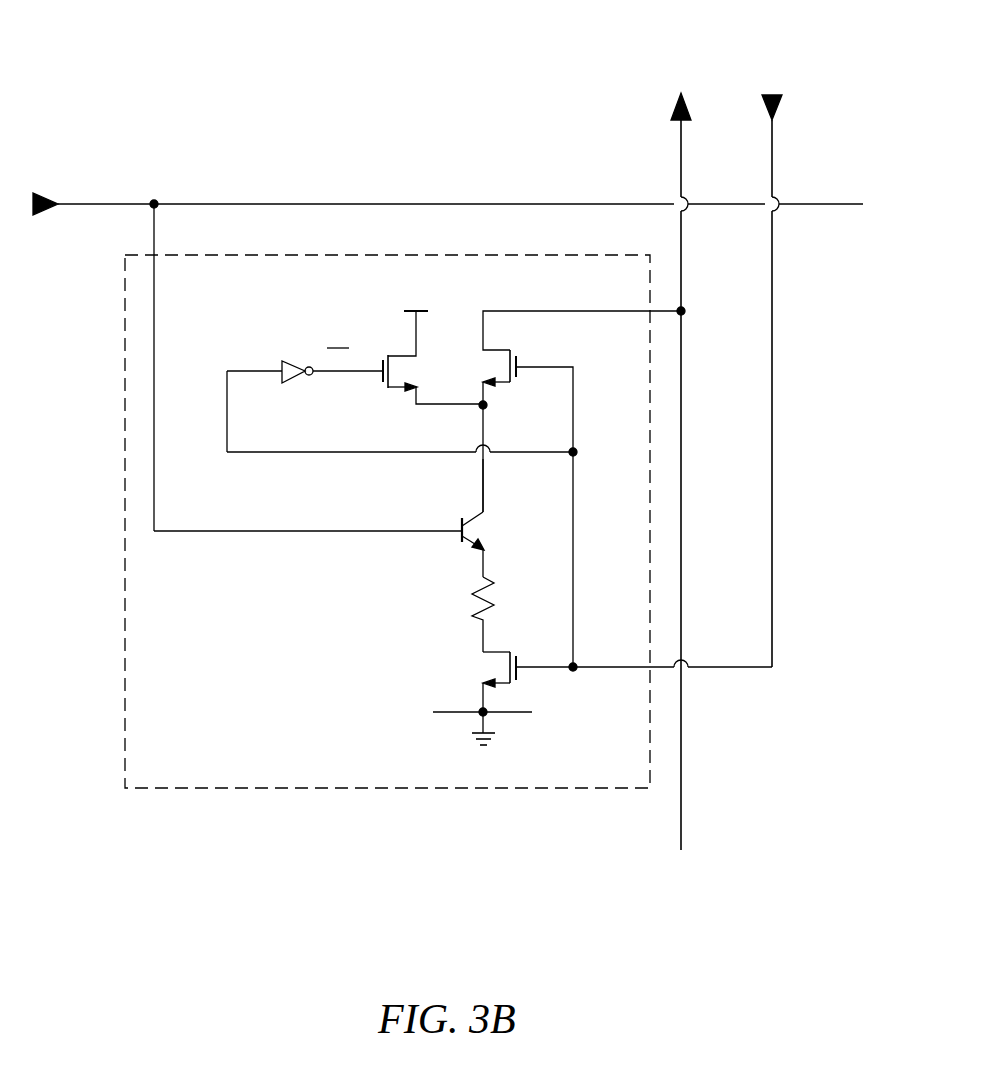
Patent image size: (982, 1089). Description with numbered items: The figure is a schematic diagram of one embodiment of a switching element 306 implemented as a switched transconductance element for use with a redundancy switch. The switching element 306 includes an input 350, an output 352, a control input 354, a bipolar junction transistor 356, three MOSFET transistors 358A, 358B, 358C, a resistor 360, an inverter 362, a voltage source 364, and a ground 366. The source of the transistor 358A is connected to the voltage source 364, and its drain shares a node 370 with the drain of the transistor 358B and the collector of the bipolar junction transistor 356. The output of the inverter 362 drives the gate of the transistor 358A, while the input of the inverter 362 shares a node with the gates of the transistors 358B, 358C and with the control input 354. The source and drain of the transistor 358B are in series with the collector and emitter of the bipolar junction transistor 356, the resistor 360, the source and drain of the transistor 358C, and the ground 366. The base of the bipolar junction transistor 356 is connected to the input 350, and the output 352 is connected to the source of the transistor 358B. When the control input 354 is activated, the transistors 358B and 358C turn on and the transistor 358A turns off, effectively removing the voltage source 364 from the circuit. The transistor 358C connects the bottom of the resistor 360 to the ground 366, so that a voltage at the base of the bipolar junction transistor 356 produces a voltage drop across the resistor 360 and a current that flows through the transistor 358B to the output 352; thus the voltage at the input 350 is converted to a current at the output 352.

The switching element 306 is at (143, 73).
The input 350 is at (68, 173).
The output 352 is at (689, 104).
The control input 354 is at (776, 95).
The bipolar junction transistor 356 is at (470, 519).
The transistor 358A is at (397, 354).
The transistor 358B is at (517, 356).
The transistor 358C is at (500, 652).
The resistor 360 is at (495, 593).
The inverter 362 is at (291, 360).
The voltage source 364 is at (421, 310).
The ground 366 is at (481, 748).
The node 370 is at (483, 499).